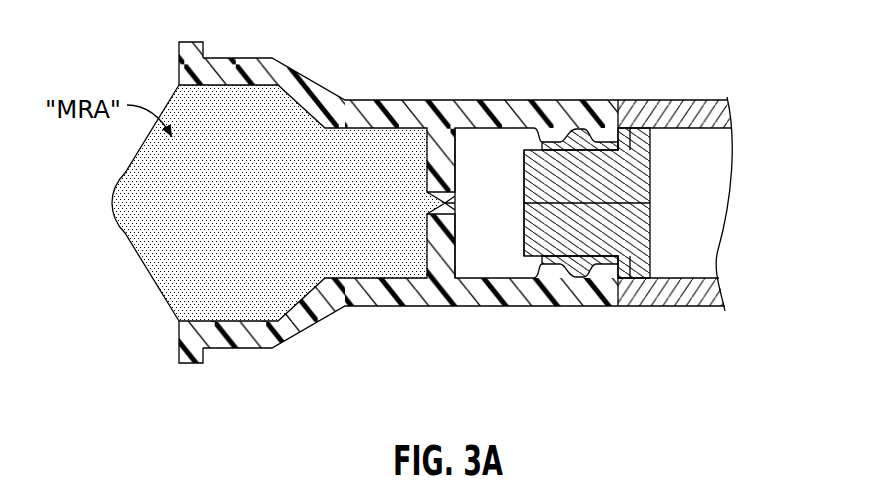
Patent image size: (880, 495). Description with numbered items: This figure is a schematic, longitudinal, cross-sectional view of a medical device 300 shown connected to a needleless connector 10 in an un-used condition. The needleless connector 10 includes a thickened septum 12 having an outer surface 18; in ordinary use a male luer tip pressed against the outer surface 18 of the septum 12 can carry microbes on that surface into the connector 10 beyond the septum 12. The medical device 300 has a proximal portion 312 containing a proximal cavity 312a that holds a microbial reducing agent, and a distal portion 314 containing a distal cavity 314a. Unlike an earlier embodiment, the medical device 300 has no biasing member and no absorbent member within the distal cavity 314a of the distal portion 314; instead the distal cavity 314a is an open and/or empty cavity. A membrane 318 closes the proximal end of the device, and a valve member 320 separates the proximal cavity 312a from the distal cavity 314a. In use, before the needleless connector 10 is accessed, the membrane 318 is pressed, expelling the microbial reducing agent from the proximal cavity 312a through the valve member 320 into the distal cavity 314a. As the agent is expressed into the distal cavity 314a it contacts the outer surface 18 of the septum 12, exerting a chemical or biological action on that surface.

The needleless connector 10 is at (695, 87).
The septum 12 is at (656, 183).
The outer surface 18 is at (520, 243).
The medical device 300 is at (453, 193).
The proximal portion 312 is at (313, 72).
The proximal cavity 312a is at (207, 84).
The distal portion 314 is at (581, 93).
The distal cavity 314a is at (510, 127).
The membrane 318 is at (143, 274).
The valve member 320 is at (440, 206).